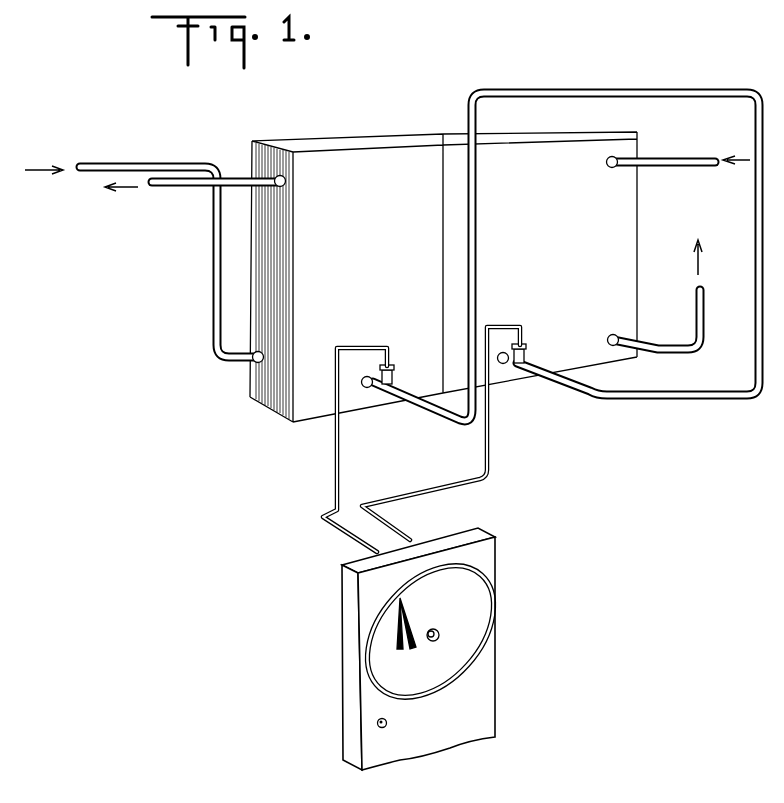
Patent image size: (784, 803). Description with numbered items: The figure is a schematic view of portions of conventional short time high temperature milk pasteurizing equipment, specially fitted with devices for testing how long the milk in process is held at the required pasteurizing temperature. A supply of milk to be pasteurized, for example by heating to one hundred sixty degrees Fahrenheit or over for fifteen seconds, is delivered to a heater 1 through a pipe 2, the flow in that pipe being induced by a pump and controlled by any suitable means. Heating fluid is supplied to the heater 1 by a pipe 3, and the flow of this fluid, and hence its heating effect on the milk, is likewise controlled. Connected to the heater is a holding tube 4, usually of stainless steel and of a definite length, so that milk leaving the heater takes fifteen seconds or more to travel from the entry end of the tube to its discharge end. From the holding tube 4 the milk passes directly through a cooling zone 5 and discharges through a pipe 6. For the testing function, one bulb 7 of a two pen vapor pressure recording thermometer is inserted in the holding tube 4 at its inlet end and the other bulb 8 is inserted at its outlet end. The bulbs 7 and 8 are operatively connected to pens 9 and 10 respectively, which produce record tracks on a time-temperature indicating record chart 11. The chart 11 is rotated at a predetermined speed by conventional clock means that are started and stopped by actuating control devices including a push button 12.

The heater 1 is at (318, 142).
The pipe 2 is at (673, 158).
The pipe 3 is at (120, 163).
The holding tube 4 is at (647, 92).
The cooling zone 5 is at (583, 133).
The pipe 6 is at (673, 347).
The bulb 7 is at (390, 378).
The bulb 8 is at (525, 358).
The pen 9 is at (400, 630).
The pen 10 is at (408, 623).
The time-temperature indicating record chart 11 is at (467, 637).
The push button 12 is at (387, 723).